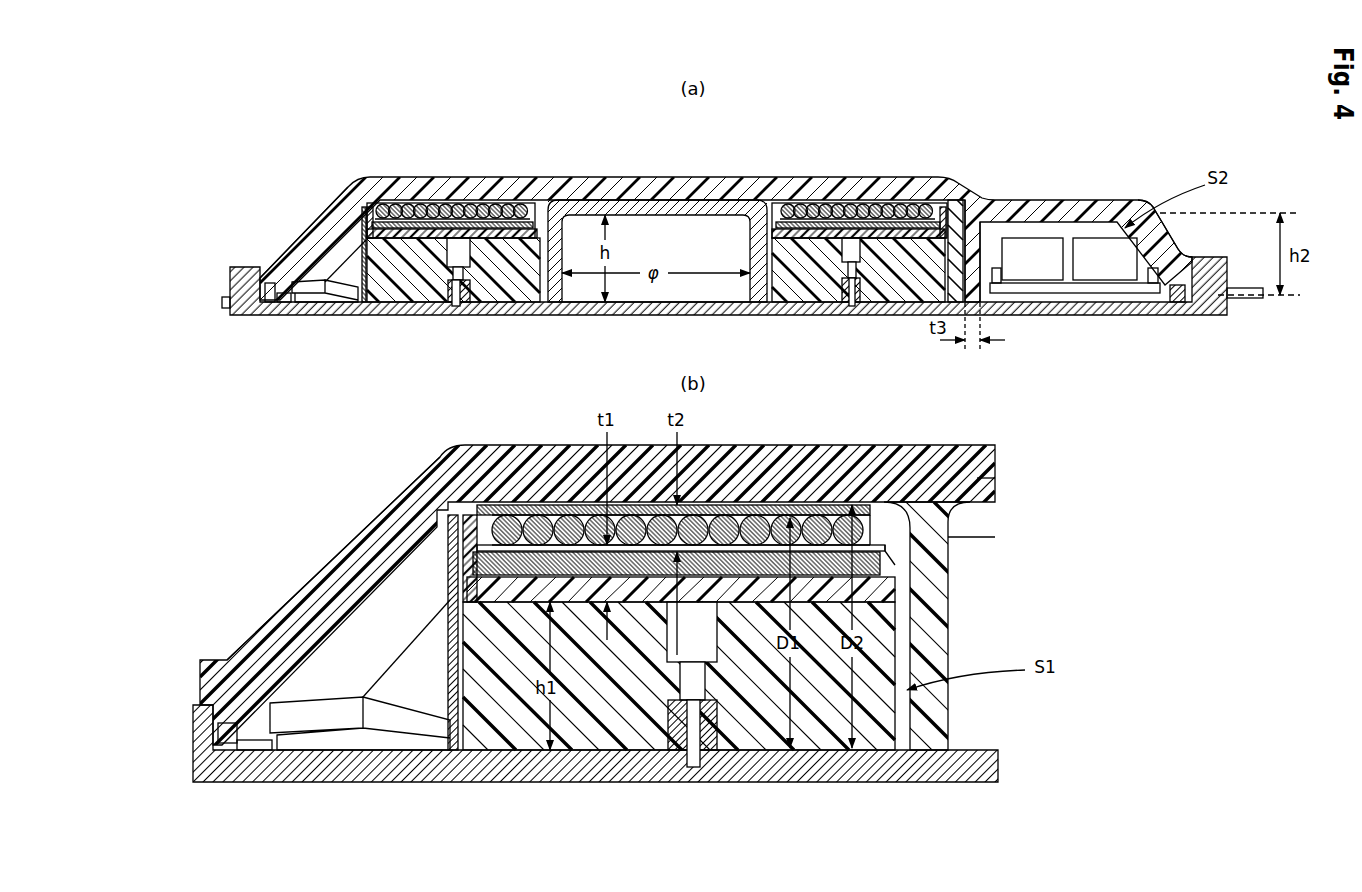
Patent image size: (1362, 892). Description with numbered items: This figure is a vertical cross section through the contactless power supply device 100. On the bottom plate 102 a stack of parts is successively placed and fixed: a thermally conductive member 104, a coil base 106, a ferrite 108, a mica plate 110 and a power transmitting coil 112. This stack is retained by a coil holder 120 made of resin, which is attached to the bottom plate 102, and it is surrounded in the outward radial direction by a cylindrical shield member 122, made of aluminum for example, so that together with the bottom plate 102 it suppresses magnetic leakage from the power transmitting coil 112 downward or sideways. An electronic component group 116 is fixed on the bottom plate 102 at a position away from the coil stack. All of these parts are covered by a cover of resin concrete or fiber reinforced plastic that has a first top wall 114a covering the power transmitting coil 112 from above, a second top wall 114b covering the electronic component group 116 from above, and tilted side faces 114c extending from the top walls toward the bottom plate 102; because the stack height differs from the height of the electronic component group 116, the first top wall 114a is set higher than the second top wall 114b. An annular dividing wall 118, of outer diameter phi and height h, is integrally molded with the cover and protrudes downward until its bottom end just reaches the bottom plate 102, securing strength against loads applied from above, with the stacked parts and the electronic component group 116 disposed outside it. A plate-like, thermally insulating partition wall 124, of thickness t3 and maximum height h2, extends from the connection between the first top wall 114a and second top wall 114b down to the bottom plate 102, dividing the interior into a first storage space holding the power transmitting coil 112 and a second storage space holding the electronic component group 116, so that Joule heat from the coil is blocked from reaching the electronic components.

The power supply device 100 is at (1046, 168).
The bottom plate 102 is at (243, 318).
The thermally conductive member 104 is at (392, 268).
The coil base 106 is at (392, 222).
The ferrite 108 is at (502, 210).
The mica plate 110 is at (417, 210).
The power transmitting coil 112 is at (450, 210).
The first top wall 114a is at (762, 190).
The second top wall 114b is at (1146, 203).
The side faces 114c is at (323, 222).
The electronic component group 116 is at (1097, 262).
The dividing wall 118 is at (750, 238).
The coil holder 120 is at (565, 520).
The shield member 122 is at (344, 210).
The partition wall 124 is at (984, 200).